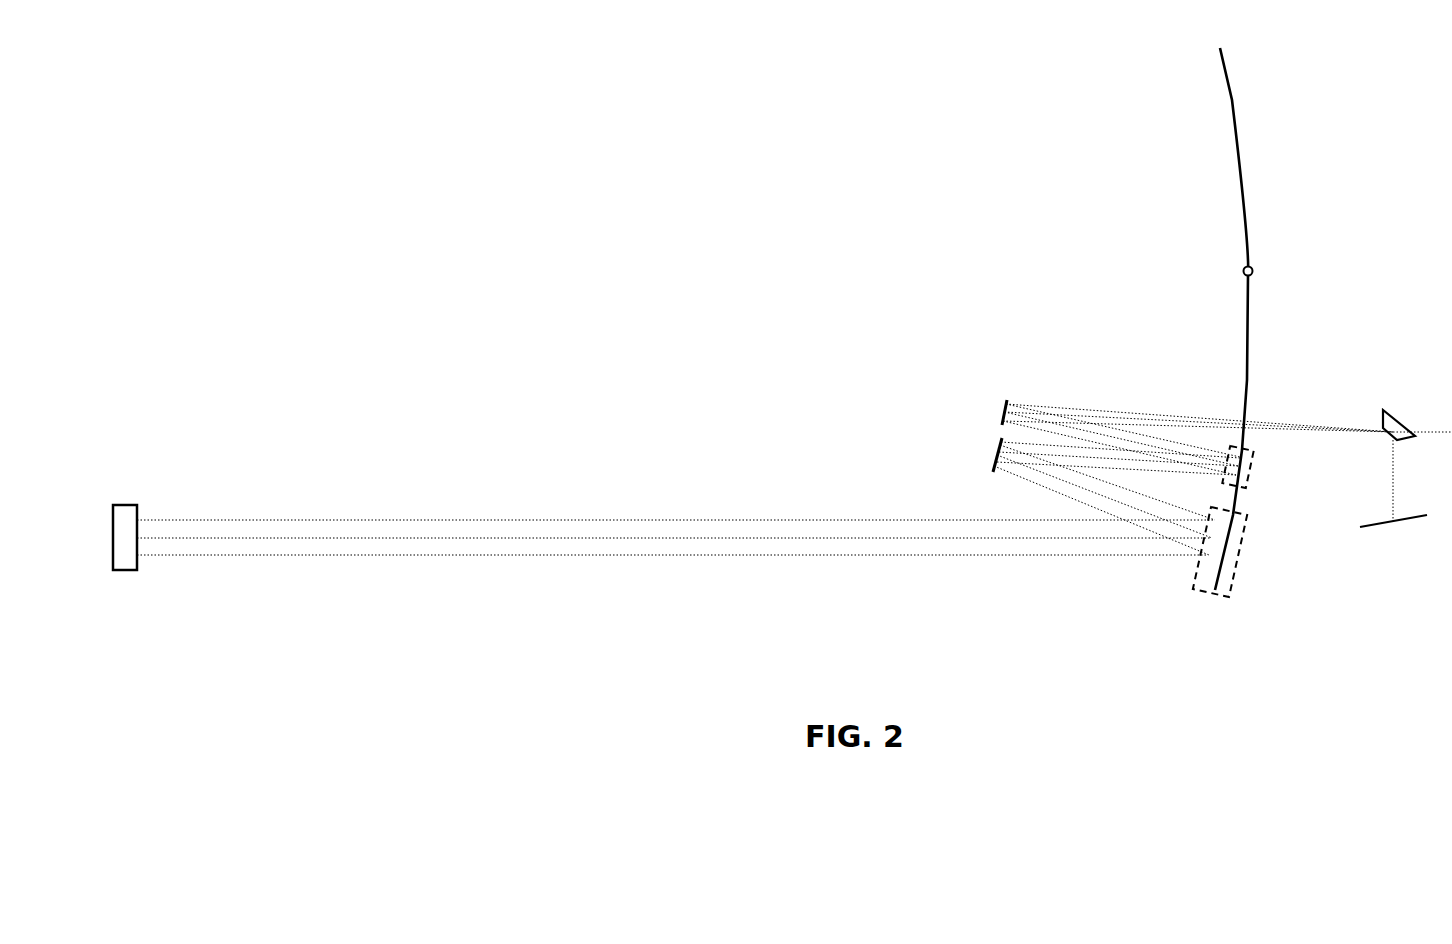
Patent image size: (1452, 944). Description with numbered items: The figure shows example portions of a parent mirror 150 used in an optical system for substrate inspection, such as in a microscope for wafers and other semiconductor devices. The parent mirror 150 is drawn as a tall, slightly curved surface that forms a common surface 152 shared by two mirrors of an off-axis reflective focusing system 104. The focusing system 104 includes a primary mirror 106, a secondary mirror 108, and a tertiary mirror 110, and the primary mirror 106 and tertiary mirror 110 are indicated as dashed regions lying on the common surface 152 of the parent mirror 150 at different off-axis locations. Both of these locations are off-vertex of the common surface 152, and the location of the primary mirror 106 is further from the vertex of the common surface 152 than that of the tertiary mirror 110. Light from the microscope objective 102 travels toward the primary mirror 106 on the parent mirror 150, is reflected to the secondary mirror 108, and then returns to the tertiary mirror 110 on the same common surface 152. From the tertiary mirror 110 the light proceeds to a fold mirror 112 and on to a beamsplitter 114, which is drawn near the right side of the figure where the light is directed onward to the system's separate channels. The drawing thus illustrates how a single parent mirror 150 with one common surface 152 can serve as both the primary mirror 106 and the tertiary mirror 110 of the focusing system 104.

The microscope objective 102 is at (125, 505).
The off-axis reflective focusing system 104 is at (1120, 578).
The primary mirror 106 is at (1242, 552).
The secondary mirror 108 is at (998, 452).
The tertiary mirror 110 is at (1248, 477).
The fold mirror 112 is at (1004, 411).
The beamsplitter 114 is at (1398, 420).
The parent mirror 150 is at (1237, 120).
The common surface 152 is at (1253, 270).